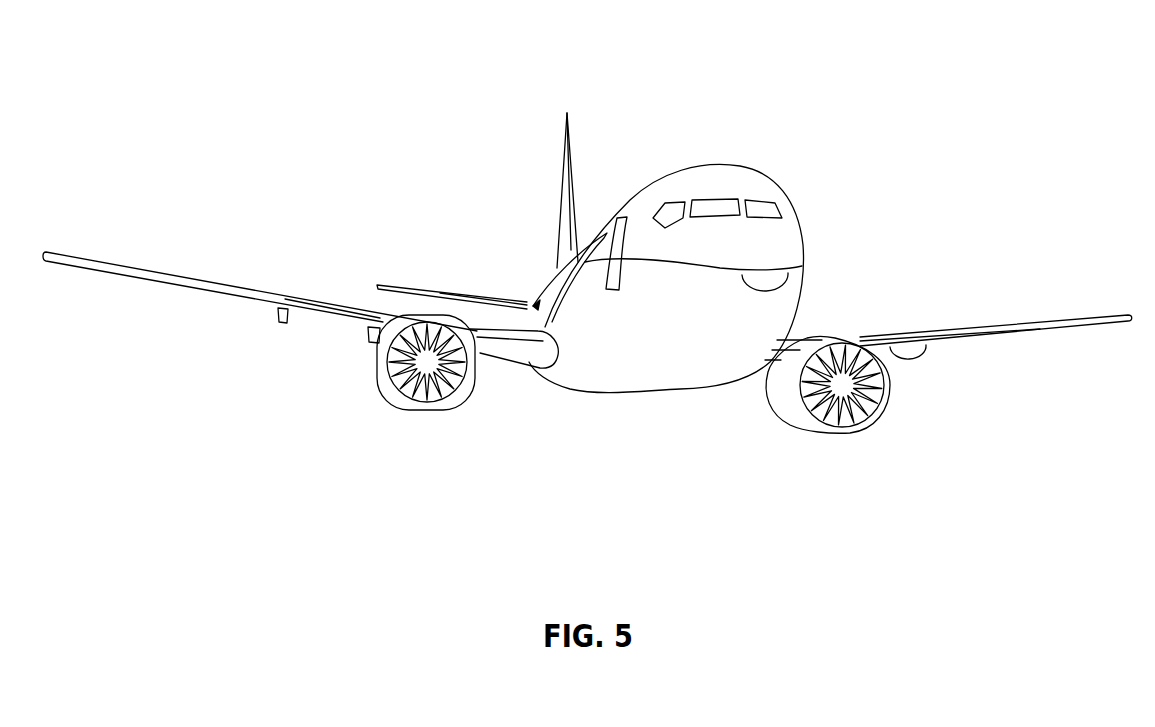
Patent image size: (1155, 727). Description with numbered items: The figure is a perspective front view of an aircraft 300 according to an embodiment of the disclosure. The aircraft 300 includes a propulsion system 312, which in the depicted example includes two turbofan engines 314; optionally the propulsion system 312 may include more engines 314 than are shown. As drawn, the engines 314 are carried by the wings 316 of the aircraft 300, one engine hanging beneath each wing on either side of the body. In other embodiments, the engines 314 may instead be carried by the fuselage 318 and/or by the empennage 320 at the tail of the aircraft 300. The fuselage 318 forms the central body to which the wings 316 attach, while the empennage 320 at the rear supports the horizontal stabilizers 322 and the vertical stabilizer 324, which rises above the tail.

The aircraft 300 is at (313, 56).
The propulsion system 312 is at (929, 422).
The turbofan engines 314 is at (425, 412).
The wings 316 is at (187, 278).
The fuselage 318 is at (800, 236).
The empennage 320 is at (555, 268).
The horizontal stabilizers 322 is at (417, 290).
The vertical stabilizer 324 is at (563, 157).